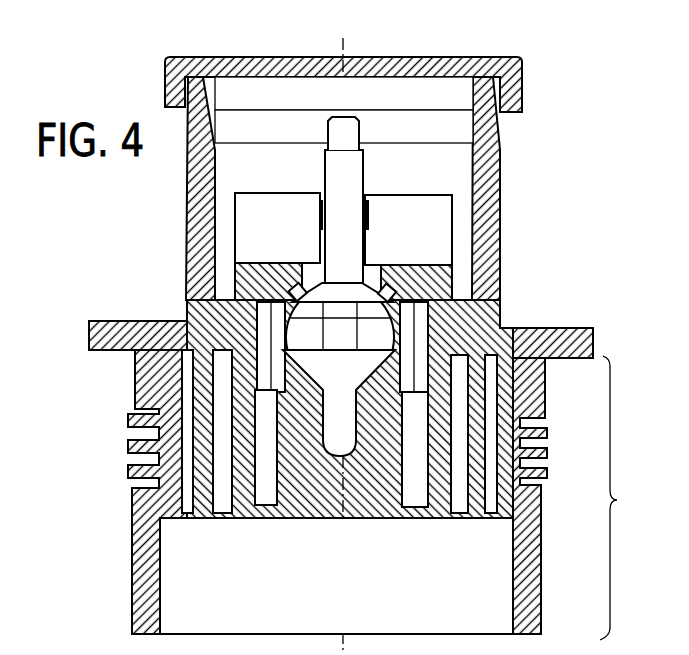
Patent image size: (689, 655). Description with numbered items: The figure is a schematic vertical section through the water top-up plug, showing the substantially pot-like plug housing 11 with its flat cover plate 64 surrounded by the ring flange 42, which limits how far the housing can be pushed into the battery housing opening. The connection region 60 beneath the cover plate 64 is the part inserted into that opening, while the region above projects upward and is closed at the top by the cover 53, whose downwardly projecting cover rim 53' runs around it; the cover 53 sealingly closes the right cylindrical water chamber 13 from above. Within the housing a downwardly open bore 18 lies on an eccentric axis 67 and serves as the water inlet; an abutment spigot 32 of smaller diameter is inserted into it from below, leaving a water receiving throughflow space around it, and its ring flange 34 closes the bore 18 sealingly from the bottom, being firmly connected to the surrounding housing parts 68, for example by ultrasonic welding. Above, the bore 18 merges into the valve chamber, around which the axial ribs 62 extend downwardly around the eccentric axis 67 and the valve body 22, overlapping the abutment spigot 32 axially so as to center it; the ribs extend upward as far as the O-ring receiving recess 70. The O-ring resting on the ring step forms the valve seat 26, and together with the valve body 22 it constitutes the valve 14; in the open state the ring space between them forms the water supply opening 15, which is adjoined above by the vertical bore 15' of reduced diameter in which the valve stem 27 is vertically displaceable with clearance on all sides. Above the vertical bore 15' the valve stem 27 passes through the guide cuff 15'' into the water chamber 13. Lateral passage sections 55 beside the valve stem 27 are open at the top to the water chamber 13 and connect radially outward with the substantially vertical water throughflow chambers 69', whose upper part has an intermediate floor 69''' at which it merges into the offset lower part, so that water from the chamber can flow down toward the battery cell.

The eccentric axis 67 is at (350, 46).
The cover 53 is at (343, 66).
The cover rim 53' is at (540, 96).
The water chamber 13 is at (456, 162).
The cover plate 64 is at (168, 328).
The plug housing 11 is at (130, 397).
The ring flange 42 is at (92, 335).
The axial ribs 62 is at (425, 330).
The bore 18 is at (417, 420).
The valve 14 is at (262, 285).
The O-ring receiving recess 70 is at (448, 282).
The passage sections 55 is at (232, 215).
The valve stem 27 is at (352, 175).
The guide cuff 15'' is at (316, 193).
The valve seat 26 is at (180, 357).
The water supply opening 15 is at (412, 252).
The vertical bore 15' is at (394, 262).
The valve body 22 is at (445, 305).
The abutment spigot 32 is at (307, 472).
The ring flange 34 is at (412, 508).
The water throughflow chambers 69' is at (363, 381).
The intermediate floor 69''' is at (327, 430).
The connection region 60 is at (406, 498).
The housing parts 68 is at (238, 490).